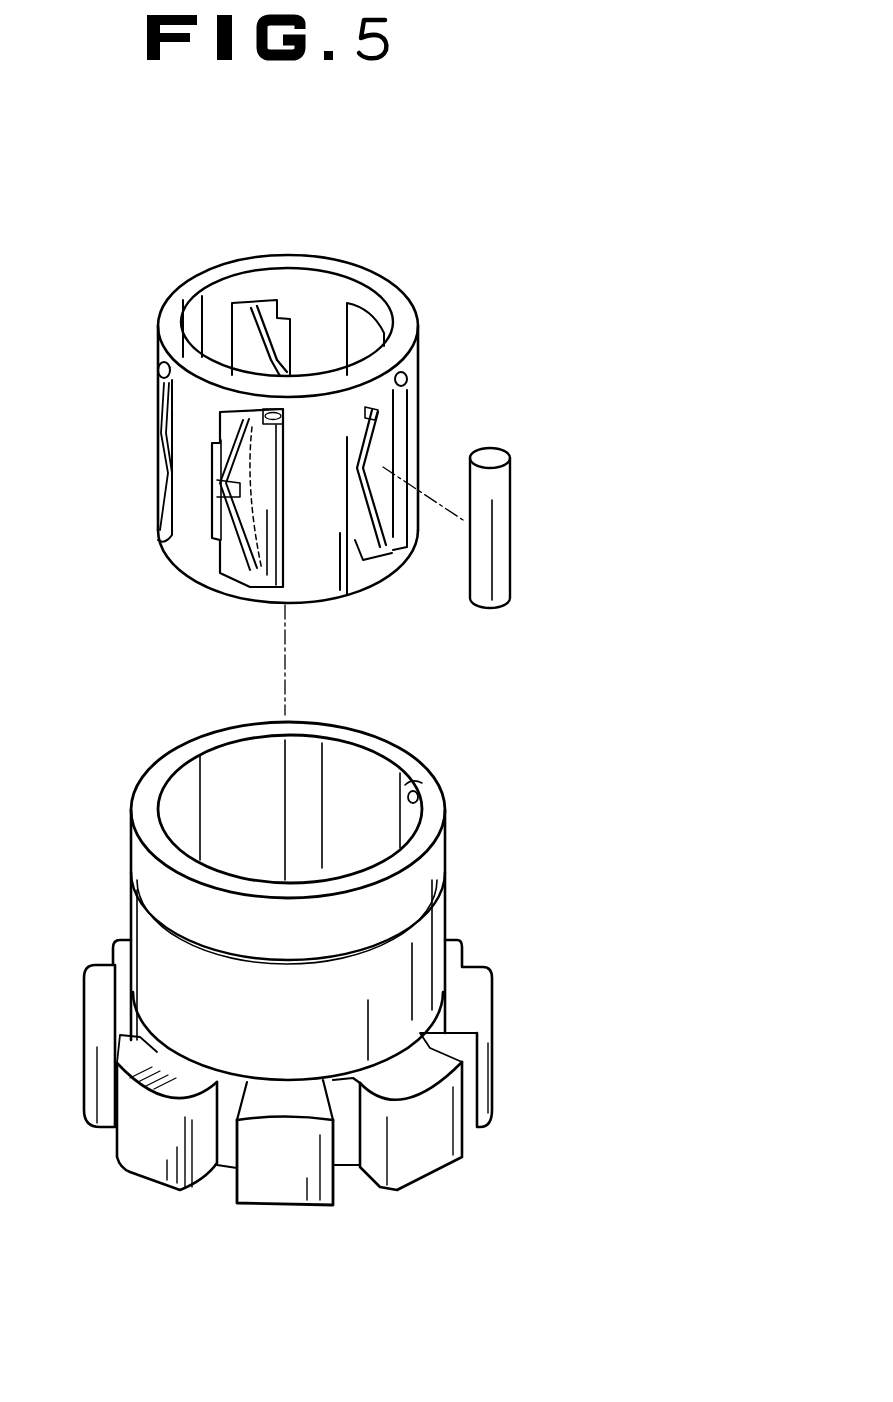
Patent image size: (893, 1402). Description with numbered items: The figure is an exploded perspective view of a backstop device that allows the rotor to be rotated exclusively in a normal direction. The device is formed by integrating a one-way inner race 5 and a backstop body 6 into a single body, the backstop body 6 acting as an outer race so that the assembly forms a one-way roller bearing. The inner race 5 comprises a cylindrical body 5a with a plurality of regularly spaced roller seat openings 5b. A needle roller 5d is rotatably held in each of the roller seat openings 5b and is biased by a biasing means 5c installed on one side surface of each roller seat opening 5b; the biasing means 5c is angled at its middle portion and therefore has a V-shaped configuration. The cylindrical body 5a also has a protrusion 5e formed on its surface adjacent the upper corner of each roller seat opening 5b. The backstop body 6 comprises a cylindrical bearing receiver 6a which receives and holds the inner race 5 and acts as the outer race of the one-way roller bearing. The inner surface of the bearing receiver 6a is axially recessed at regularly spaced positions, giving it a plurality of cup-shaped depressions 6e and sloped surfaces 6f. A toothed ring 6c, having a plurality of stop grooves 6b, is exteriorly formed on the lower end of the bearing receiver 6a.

The one-way inner race 5 is at (132, 345).
The cylindrical body 5a is at (362, 272).
The roller seat openings 5b is at (383, 438).
The biasing means 5c is at (393, 550).
The needle roller 5d is at (497, 516).
The protrusion 5e is at (404, 379).
The backstop body 6 is at (95, 778).
The cylindrical bearing receiver 6a is at (445, 920).
The stop grooves 6b is at (345, 1165).
The toothed ring 6c is at (142, 1157).
The cup-shaped depressions 6e is at (432, 782).
The sloped surfaces 6f is at (405, 785).